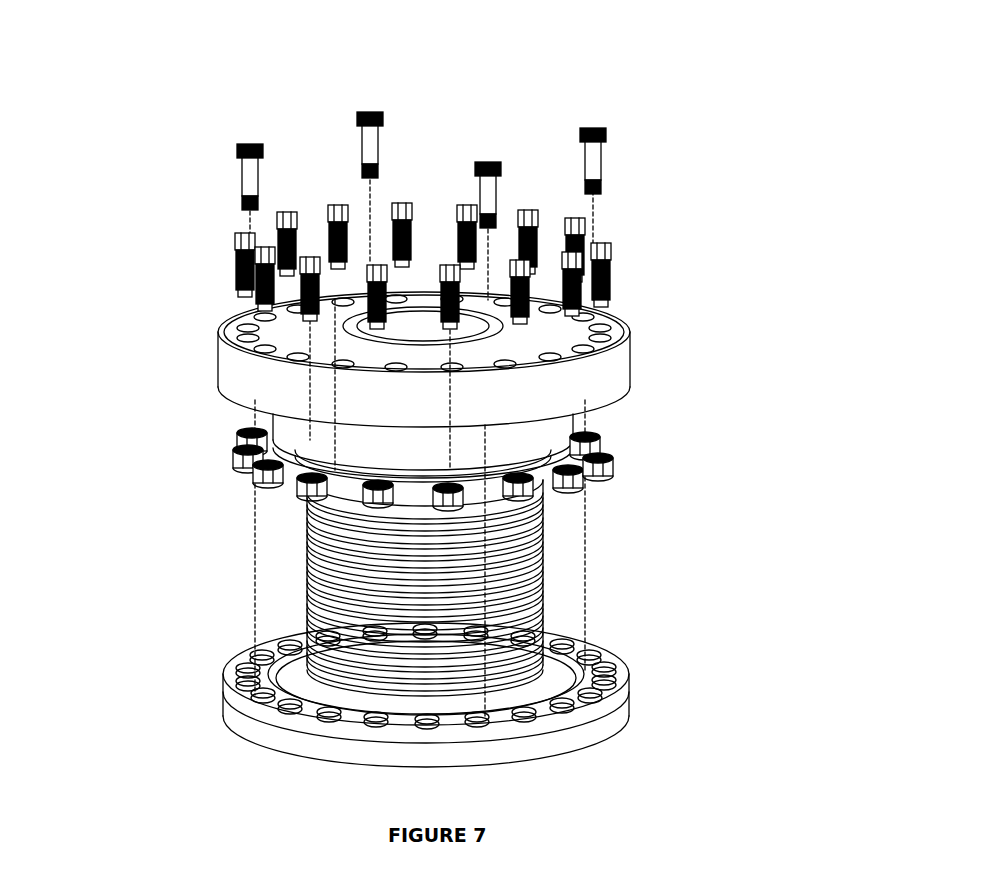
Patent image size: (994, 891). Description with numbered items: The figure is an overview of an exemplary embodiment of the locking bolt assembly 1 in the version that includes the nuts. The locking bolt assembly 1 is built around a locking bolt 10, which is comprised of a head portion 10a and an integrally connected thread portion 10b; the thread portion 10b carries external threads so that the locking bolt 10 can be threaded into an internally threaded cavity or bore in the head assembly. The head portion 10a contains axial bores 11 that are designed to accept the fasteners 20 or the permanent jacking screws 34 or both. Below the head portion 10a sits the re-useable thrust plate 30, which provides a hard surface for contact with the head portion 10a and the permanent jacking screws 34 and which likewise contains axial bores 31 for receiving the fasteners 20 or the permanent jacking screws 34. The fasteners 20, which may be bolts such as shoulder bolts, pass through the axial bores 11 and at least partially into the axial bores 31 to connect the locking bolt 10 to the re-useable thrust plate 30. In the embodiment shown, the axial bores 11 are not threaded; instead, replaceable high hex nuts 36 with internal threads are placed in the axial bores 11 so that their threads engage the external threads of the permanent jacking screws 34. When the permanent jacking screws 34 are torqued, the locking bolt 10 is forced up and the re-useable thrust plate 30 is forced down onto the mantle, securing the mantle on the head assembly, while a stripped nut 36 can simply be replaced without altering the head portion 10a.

The locking bolt assembly 1 is at (496, 85).
The locking bolt 10 is at (688, 478).
The head portion 10a is at (600, 367).
The thread portion 10b is at (580, 560).
The axial bores 11 is at (223, 336).
The fasteners 20 is at (597, 161).
The re-useable thrust plate 30 is at (560, 720).
The axial bores 31 is at (290, 701).
The permanent jacking screws 34 is at (237, 265).
The nuts 36 is at (238, 458).